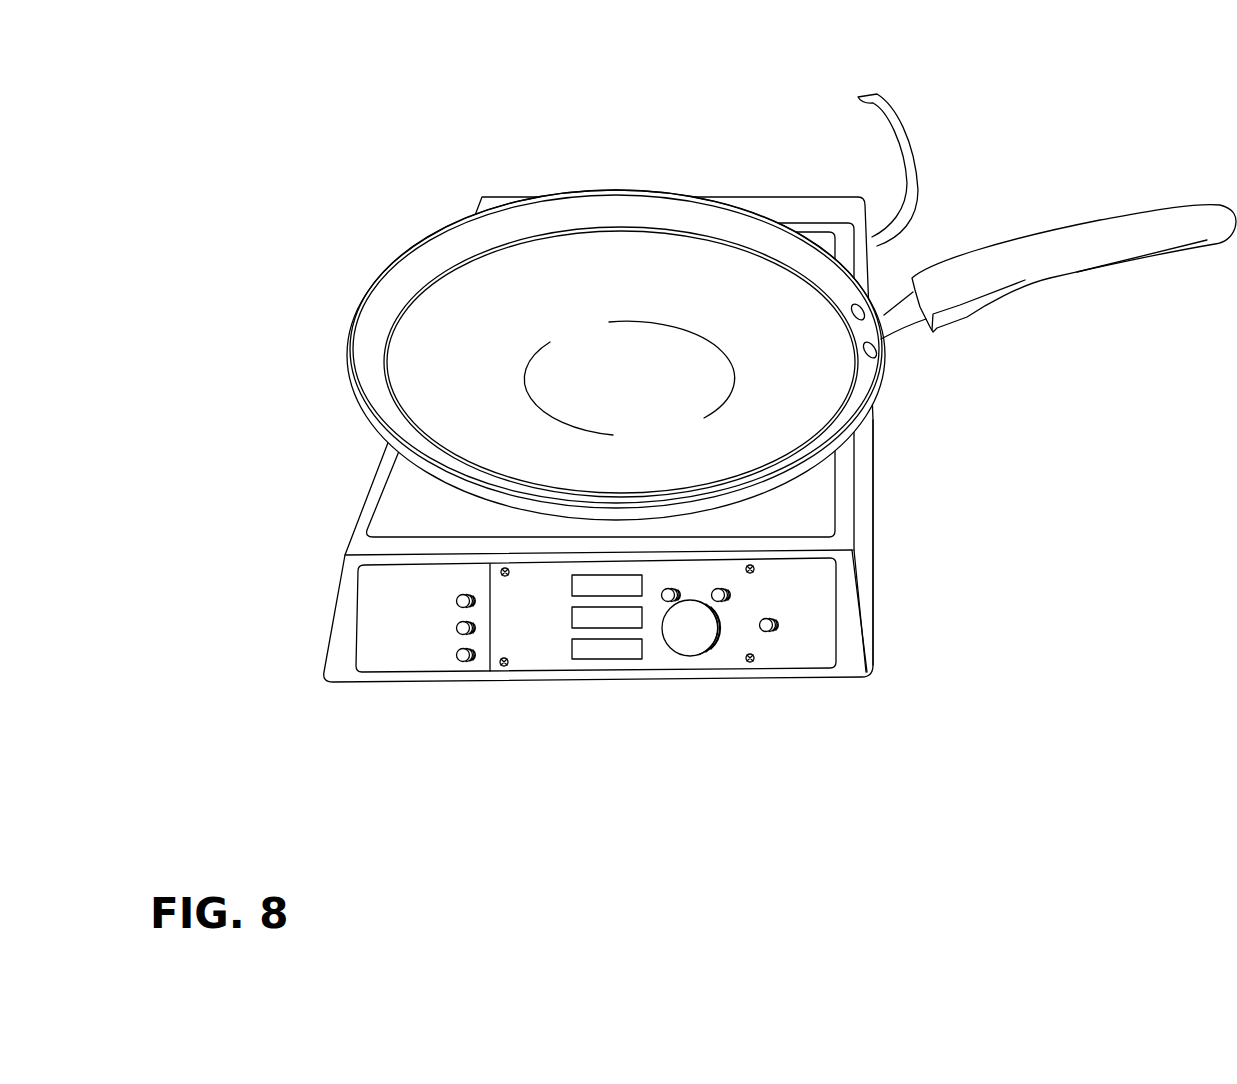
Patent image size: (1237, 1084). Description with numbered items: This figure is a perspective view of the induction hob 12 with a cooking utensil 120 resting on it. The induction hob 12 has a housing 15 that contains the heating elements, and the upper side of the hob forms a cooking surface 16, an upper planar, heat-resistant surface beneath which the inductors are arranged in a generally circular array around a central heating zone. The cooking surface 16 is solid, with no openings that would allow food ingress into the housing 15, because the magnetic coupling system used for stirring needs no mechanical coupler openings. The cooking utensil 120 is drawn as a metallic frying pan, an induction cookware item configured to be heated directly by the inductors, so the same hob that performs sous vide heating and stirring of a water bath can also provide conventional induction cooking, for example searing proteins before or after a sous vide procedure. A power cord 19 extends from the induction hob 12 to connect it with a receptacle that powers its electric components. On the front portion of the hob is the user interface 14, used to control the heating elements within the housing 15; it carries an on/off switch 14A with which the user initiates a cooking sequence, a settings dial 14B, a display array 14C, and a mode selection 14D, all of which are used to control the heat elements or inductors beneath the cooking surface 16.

The induction hob 12 is at (486, 147).
The cooking utensil 120 is at (360, 290).
The power cord 19 is at (903, 152).
The cooking surface 16 is at (407, 512).
The housing 15 is at (862, 560).
The user interface 14 is at (579, 659).
The on/off switch 14A is at (773, 630).
The settings dial 14B is at (690, 643).
The display array 14C is at (608, 663).
The mode selection 14D is at (468, 663).